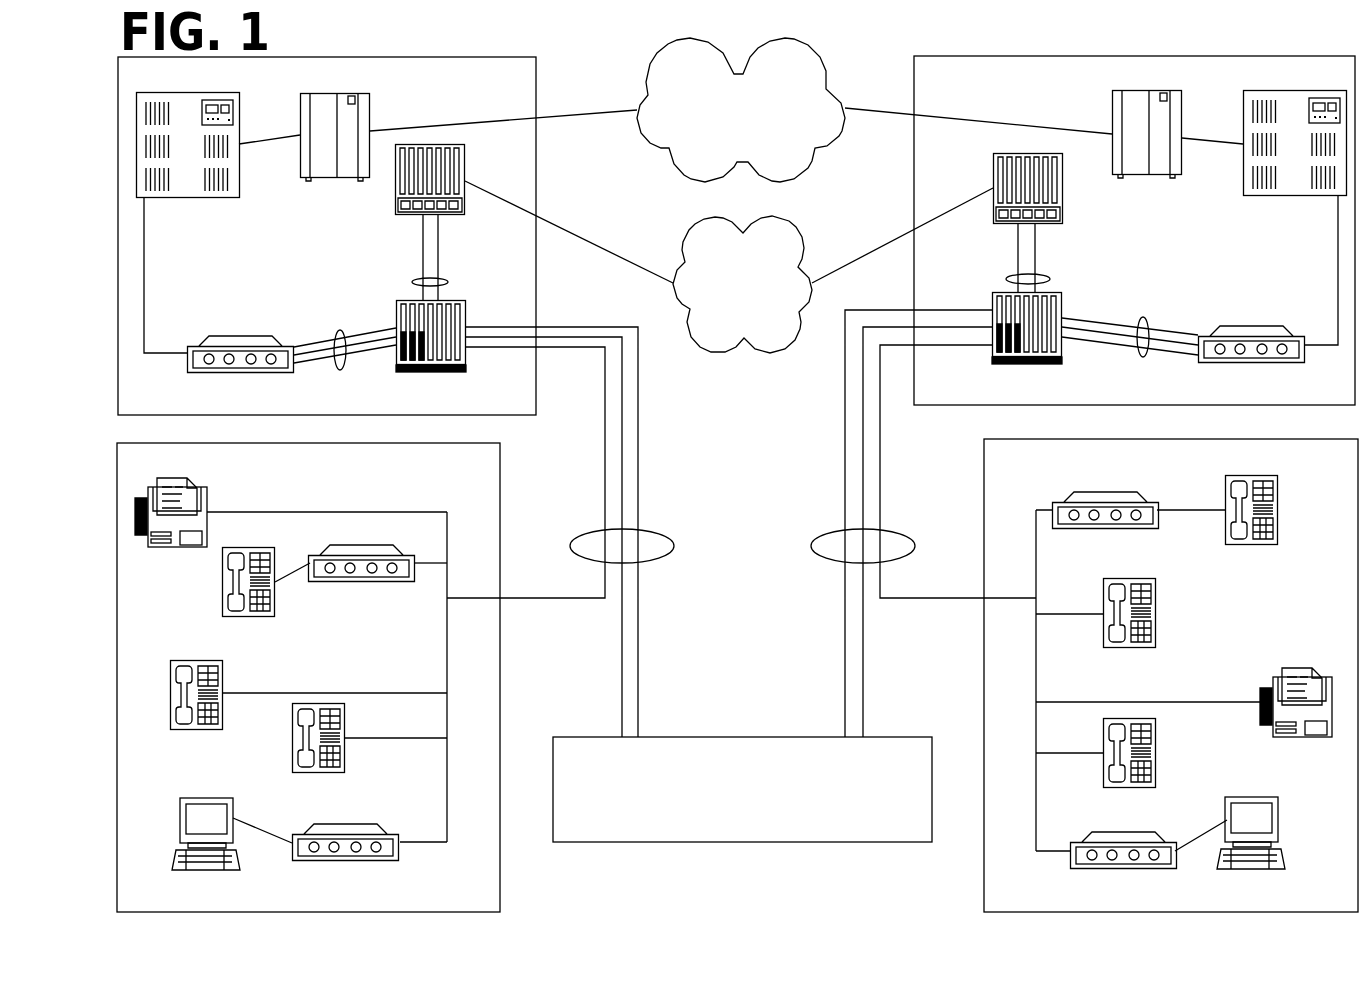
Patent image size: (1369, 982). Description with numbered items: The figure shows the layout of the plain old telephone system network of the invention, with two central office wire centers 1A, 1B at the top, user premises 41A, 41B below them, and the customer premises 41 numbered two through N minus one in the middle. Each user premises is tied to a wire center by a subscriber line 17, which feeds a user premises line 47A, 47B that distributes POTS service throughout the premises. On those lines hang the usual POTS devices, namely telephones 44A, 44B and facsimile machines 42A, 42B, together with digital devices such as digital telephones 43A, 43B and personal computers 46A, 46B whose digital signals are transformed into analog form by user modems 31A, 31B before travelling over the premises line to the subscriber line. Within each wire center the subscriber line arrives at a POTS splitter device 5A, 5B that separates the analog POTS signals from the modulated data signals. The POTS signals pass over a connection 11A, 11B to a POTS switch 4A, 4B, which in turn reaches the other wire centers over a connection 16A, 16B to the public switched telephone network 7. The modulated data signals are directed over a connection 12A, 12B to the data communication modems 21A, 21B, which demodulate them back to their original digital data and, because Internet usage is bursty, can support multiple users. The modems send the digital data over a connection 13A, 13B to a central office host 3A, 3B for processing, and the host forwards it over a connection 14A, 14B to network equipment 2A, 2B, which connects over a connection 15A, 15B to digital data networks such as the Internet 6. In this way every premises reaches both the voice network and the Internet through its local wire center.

The central office wire center 1A is at (517, 57).
The central office wire center 1B is at (965, 56).
The network equipment 2A is at (370, 131).
The network equipment 2B is at (1112, 103).
The central office host 3A is at (190, 91).
The central office host 3B is at (1278, 90).
The POTS switch 4A is at (465, 173).
The POTS switch 4B is at (1046, 205).
The POTS splitter device 5A is at (465, 310).
The POTS splitter device 5B is at (992, 300).
The Internet 6 is at (658, 143).
The public switched telephone network 7 is at (787, 233).
The connection between POTS switch and POTS splitter 11A is at (418, 283).
The connection between POTS switch and POTS splitter 11B is at (1010, 278).
The connection between POTS splitter and modem 12A is at (340, 327).
The connection between POTS splitter and modem 12B is at (1145, 318).
The connection between modem and CO host 13A is at (143, 347).
The connection between modem and CO host 13B is at (1317, 346).
The connection between CO host and network equipment 14A is at (262, 143).
The connection between CO host and network equipment 14B is at (1228, 137).
The connection to the Internet 15A is at (553, 118).
The connection to the Internet 15B is at (883, 118).
The connection to the PSTN 16A is at (625, 260).
The connection to the PSTN 16B is at (870, 252).
The subscriber line 17 is at (655, 530).
The data communication modem 21A is at (192, 341).
The data communication modem 21B is at (1295, 327).
The modem 31A is at (348, 543).
The modem 31B is at (1062, 493).
The user premises 41 is at (708, 737).
The user premises 41A is at (500, 493).
The user premises 41B is at (983, 492).
The facsimile machine 42A is at (208, 492).
The facsimile machine 42B is at (1272, 678).
The digital telephone 43A is at (222, 585).
The digital telephone 43B is at (1278, 492).
The telephone 44A is at (225, 678).
The telephone 44B is at (1157, 635).
The personal computer 46A is at (182, 798).
The personal computer 46B is at (1280, 800).
The user premises line 47A is at (448, 668).
The user premises line 47B is at (1035, 684).